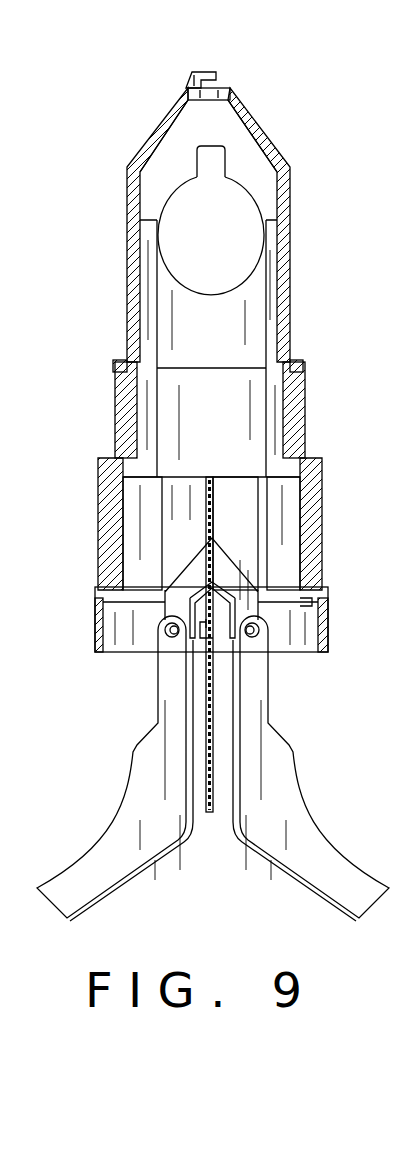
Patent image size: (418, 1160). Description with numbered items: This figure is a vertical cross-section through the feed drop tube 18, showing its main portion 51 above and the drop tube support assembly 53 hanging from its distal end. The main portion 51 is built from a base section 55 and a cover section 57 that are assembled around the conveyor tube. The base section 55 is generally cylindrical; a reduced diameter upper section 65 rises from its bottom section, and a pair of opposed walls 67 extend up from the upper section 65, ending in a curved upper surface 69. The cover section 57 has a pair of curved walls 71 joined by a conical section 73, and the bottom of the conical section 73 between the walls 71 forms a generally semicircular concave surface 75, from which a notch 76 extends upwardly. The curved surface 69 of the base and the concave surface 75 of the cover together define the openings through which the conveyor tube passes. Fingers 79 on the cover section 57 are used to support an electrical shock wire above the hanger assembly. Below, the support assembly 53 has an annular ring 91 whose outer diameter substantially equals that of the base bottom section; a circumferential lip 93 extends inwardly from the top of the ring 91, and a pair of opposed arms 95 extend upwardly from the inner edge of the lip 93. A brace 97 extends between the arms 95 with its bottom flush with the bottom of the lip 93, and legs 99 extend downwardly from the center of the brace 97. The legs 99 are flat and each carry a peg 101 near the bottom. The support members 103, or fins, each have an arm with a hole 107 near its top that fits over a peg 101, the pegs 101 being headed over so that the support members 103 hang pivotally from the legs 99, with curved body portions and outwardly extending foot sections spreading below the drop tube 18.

The feed drop tube 18 is at (97, 365).
The main portion 51 is at (303, 314).
The drop tube support assembly 53 is at (333, 622).
The base section 55 is at (278, 522).
The cover section 57 is at (308, 425).
The upper section 65 is at (236, 418).
The opposed walls 67 is at (228, 342).
The curved upper surface 69 is at (210, 293).
The curved walls 71 is at (127, 213).
The conical section 73 is at (278, 147).
The concave surface 75 is at (236, 190).
The notch 76 is at (212, 158).
The fingers 79 is at (205, 72).
The annular ring 91 is at (326, 638).
The circumferential lip 93 is at (306, 607).
The opposed arms 95 is at (246, 515).
The brace 97 is at (208, 496).
The legs 99 is at (167, 603).
The peg 101 is at (166, 632).
The support members 103 is at (113, 827).
The hole 107 is at (213, 623).